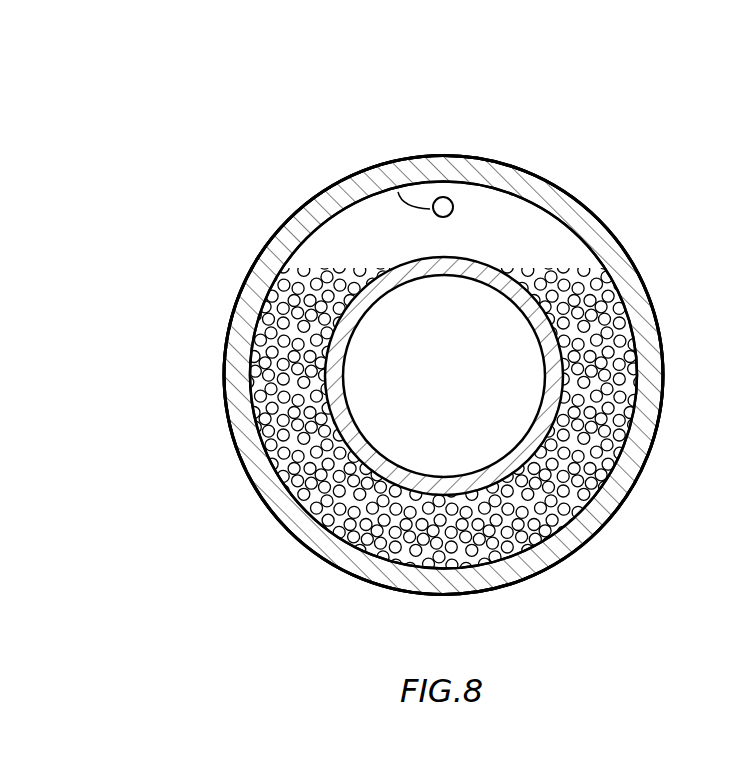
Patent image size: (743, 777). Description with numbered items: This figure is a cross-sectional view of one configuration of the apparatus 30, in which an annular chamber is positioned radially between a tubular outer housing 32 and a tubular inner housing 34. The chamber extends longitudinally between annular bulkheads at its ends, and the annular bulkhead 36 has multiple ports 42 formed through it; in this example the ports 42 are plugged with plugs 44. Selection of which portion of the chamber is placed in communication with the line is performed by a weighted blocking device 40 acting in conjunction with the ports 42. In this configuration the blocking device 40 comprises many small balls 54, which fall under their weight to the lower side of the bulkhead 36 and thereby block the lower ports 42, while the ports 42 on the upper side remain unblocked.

The apparatus 30 is at (609, 149).
The tubular outer housing 32 is at (247, 475).
The tubular inner housing 34 is at (352, 413).
The annular bulkhead 36 is at (585, 237).
The weighted blocking device 40 is at (629, 317).
The ports 42 is at (450, 198).
The plugs 44 is at (398, 192).
The small balls 54 is at (638, 348).